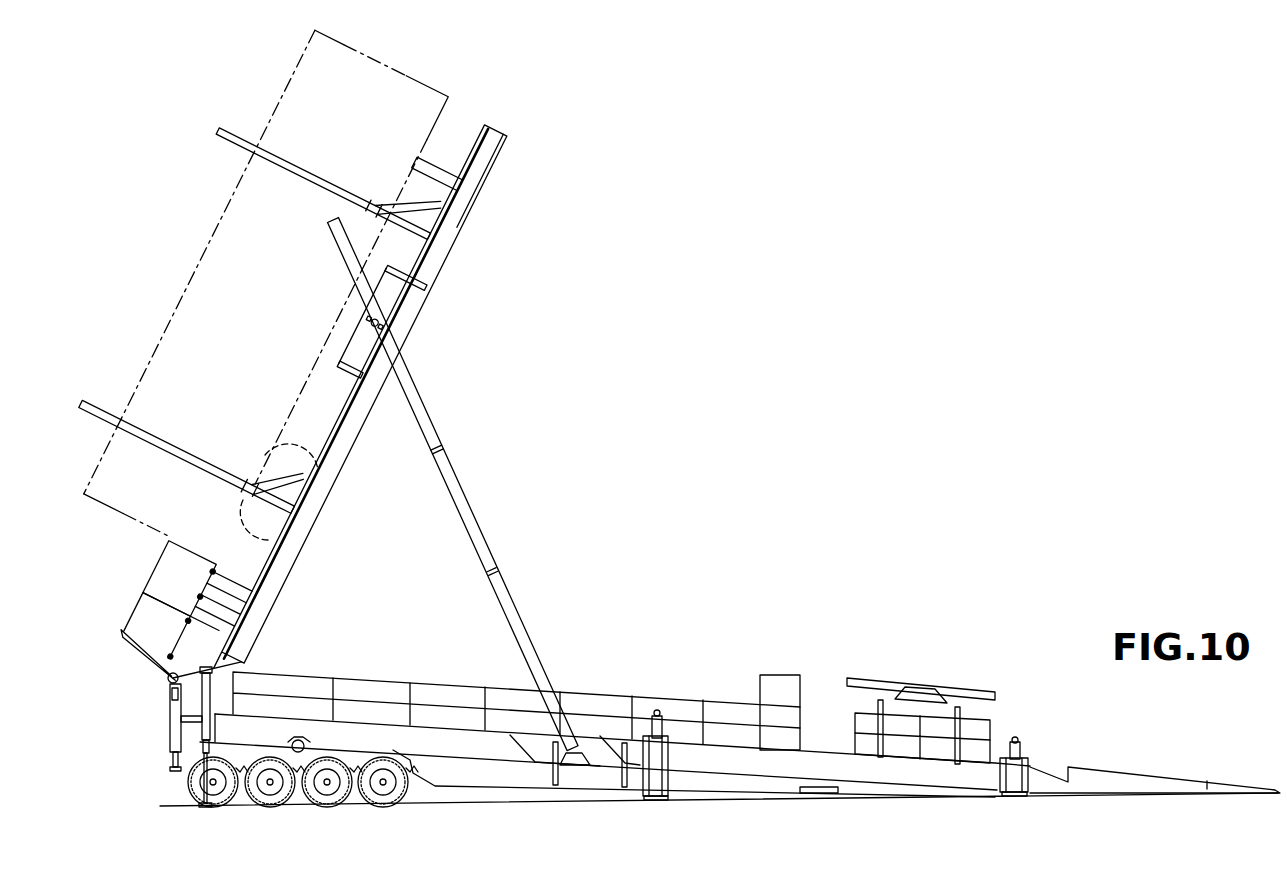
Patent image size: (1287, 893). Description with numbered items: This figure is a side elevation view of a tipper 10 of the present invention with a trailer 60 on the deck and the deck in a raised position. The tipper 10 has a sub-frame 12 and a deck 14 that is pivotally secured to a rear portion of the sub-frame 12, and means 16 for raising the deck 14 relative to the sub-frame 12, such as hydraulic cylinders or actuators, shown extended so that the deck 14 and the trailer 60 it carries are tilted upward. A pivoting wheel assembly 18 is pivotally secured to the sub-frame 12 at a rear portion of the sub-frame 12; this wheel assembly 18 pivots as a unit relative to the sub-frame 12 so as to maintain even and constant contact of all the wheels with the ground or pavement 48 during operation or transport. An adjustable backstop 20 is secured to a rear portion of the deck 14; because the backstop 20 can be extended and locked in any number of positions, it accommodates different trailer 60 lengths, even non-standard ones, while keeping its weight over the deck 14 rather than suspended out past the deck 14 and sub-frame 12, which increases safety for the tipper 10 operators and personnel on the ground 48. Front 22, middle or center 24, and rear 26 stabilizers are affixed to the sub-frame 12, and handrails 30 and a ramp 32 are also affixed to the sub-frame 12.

The tipper 10 is at (185, 235).
The sub-frame 12 is at (443, 803).
The deck 14 is at (333, 403).
The means for raising the deck 16 is at (468, 492).
The pivoting wheel assembly 18 is at (188, 783).
The adjustable backstop 20 is at (184, 616).
The front stabilizer 22 is at (1003, 740).
The middle or center stabilizer 24 is at (633, 772).
The rear stabilizer 26 is at (203, 723).
The handrails 30 is at (677, 697).
The ramp 32 is at (1130, 773).
The ground or pavement 48 is at (888, 792).
The trailer 60 is at (266, 295).